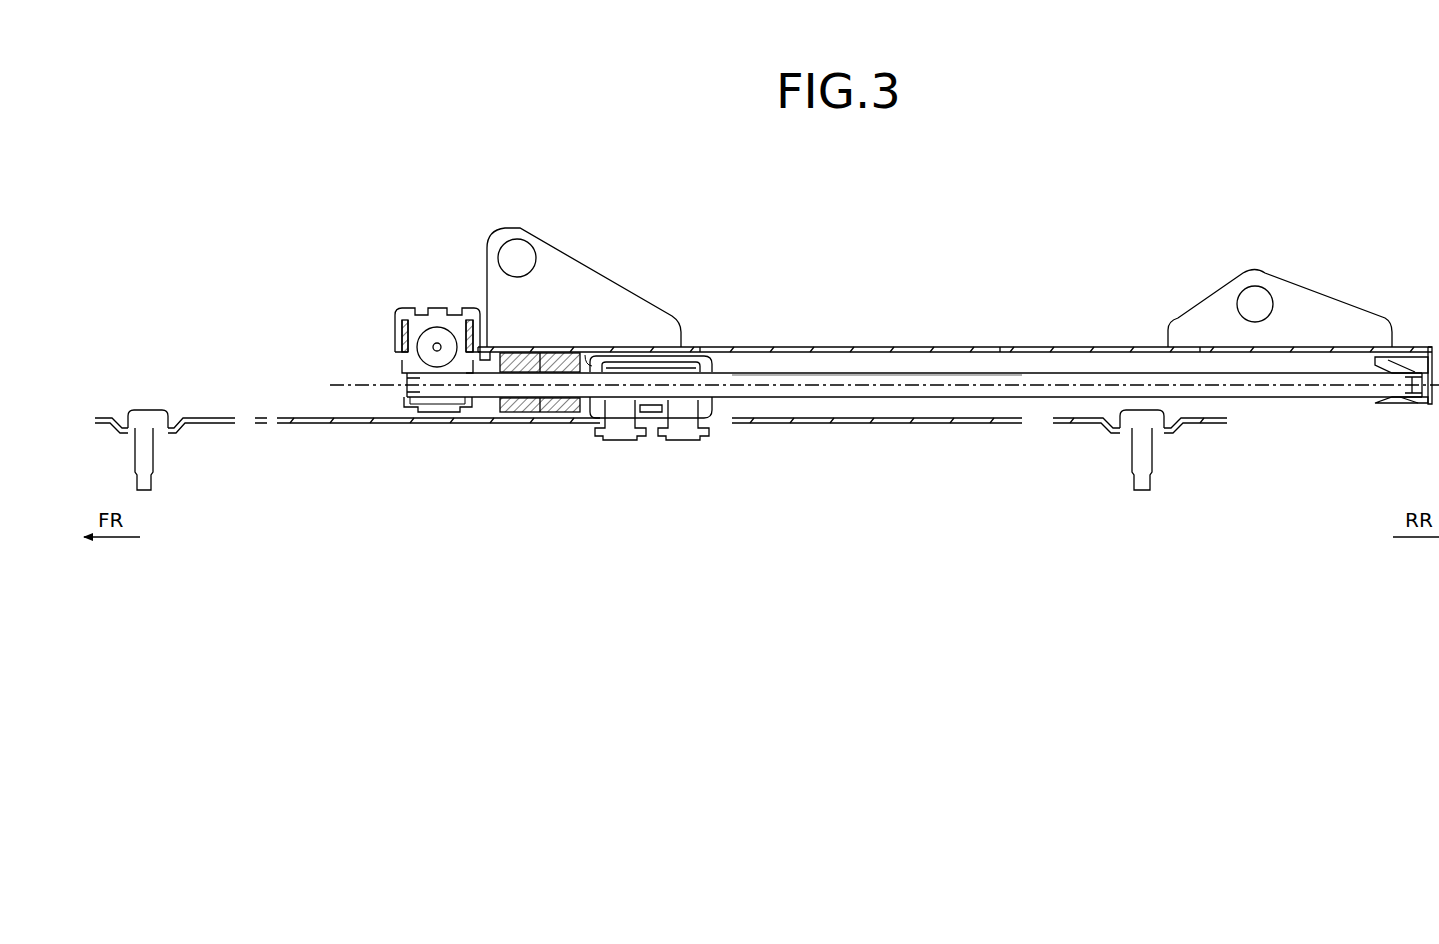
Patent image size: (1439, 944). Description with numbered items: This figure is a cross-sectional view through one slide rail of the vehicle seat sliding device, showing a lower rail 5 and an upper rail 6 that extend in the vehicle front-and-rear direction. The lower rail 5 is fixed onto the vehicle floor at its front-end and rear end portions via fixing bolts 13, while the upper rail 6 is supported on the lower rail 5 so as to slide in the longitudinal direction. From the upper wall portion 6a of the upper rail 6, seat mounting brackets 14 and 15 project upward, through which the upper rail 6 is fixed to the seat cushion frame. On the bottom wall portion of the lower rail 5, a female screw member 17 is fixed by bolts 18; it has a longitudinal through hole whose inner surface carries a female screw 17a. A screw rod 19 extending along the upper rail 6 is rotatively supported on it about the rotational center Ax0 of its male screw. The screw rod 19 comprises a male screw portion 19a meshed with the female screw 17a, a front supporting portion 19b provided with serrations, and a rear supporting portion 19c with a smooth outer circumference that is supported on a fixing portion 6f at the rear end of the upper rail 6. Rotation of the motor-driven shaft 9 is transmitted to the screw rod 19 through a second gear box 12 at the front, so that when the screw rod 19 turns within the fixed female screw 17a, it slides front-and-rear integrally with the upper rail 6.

The lower rail 5 is at (400, 422).
The upper rail 6 is at (1091, 343).
The upper wall portion 6a is at (915, 345).
The fixing portion 6f is at (1407, 358).
The shaft 9 is at (437, 345).
The second gear box 12 is at (402, 311).
The fixing bolt 13 is at (148, 468).
The seat mounting bracket 14 is at (604, 295).
The seat mounting bracket 15 is at (1318, 310).
The female screw member 17 is at (691, 350).
The female screw 17a is at (638, 370).
The bolt 18 is at (615, 442).
The screw rod 19 is at (1293, 400).
The male screw portion 19a is at (1038, 398).
The supporting portion 19b is at (440, 400).
The supporting portion 19c is at (1405, 402).
The rotational center Ax0 is at (337, 383).